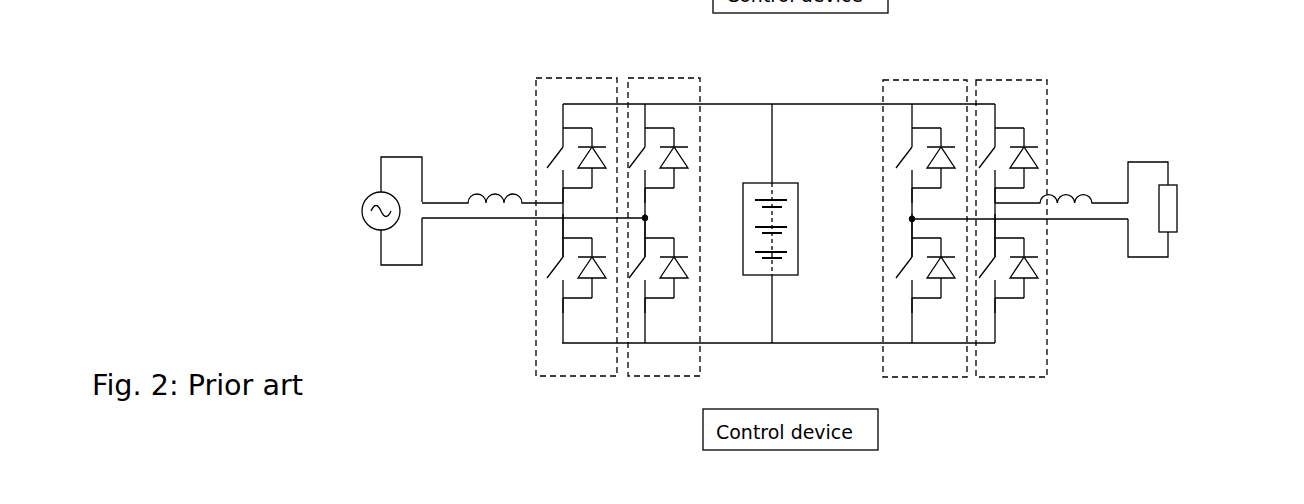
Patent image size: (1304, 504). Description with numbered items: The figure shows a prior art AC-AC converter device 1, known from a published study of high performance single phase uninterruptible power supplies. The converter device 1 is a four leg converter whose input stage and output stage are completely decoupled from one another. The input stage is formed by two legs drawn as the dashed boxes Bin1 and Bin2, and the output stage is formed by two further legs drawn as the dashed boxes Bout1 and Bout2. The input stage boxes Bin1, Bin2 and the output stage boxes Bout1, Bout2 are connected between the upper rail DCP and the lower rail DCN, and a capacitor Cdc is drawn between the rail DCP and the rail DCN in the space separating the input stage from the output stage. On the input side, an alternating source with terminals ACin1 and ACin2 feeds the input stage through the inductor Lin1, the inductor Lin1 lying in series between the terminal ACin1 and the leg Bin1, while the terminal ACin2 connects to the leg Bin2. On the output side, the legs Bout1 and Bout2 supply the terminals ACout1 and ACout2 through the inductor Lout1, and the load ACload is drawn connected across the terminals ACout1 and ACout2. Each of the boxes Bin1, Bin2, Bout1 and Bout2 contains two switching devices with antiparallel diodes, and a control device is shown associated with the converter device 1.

The AC-AC converter device 1 is at (502, 85).
The input stage box Bin1 is at (570, 75).
The input stage box Bin2 is at (672, 75).
The output stage box Bout1 is at (930, 78).
The output stage box Bout2 is at (1013, 80).
The positive DC bus DCP is at (779, 86).
The negative DC bus DCN is at (778, 357).
The DC link capacitor Cdc is at (786, 223).
The input inductor Lin1 is at (492, 178).
The output inductor Lout1 is at (1061, 181).
The AC input terminal 1 ACin1 is at (392, 179).
The AC input terminal 2 ACin2 is at (396, 260).
The AC output terminal 1 ACout1 is at (1169, 165).
The AC output terminal 2 ACout2 is at (1165, 263).
The AC load ACload is at (1217, 208).